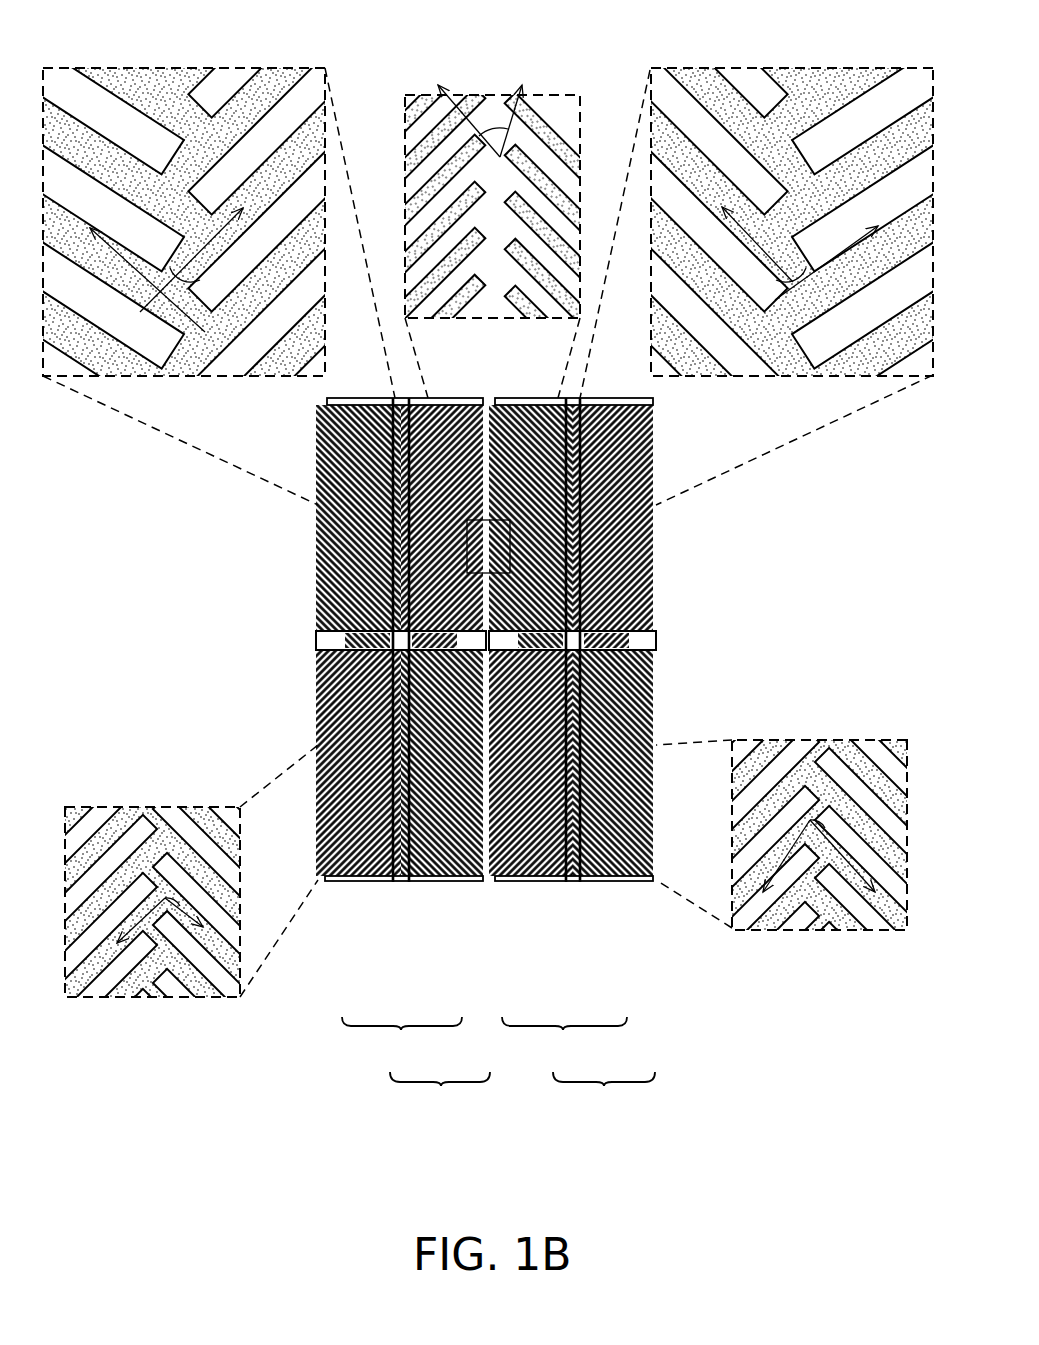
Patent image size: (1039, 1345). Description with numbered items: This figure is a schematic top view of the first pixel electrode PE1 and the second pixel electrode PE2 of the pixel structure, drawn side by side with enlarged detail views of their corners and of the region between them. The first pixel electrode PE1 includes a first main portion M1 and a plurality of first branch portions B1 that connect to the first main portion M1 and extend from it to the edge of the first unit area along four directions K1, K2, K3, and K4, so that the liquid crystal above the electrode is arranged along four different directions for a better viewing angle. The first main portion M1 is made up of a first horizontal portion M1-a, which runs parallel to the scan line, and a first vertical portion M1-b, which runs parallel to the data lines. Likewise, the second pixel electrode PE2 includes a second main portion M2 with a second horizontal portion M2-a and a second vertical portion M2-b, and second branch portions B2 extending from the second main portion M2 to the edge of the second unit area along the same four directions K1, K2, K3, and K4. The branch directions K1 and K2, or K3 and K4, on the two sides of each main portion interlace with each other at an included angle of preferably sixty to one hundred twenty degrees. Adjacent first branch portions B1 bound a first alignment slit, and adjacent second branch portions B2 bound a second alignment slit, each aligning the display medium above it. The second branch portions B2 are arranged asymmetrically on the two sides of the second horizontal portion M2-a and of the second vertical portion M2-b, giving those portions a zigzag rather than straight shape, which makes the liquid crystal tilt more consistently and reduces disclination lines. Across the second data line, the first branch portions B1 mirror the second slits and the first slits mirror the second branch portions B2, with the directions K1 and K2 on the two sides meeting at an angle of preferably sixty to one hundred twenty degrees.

The first pixel electrode PE1 is at (278, 568).
The second pixel electrode PE2 is at (694, 567).
The first main portion M1 is at (301, 540).
The second main portion M2 is at (654, 540).
The first horizontal portion M1-a is at (432, 884).
The first vertical portion M1-b is at (400, 884).
The second horizontal portion M2-a is at (531, 884).
The second vertical portion M2-b is at (572, 884).
The first branch portions B1 is at (478, 882).
The second branch portions B2 is at (653, 882).
The first extending direction K1 is at (523, 178).
The second extending direction K2 is at (427, 189).
The third extending direction K3 is at (448, 897).
The fourth extending direction K4 is at (533, 887).